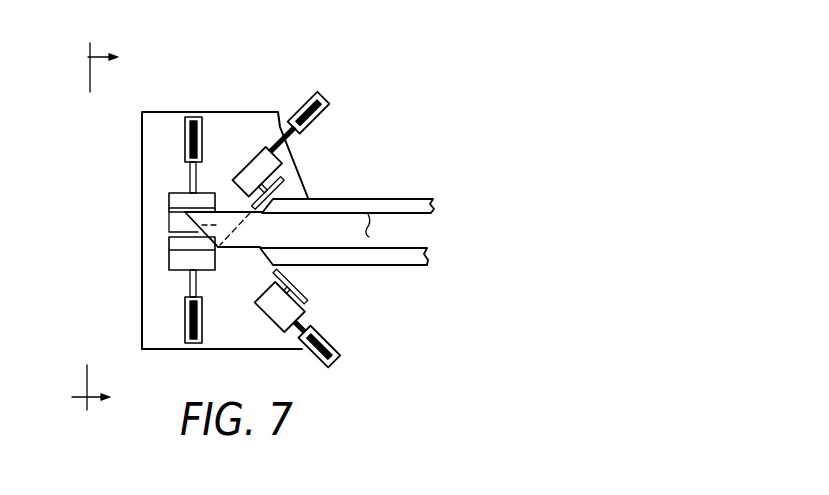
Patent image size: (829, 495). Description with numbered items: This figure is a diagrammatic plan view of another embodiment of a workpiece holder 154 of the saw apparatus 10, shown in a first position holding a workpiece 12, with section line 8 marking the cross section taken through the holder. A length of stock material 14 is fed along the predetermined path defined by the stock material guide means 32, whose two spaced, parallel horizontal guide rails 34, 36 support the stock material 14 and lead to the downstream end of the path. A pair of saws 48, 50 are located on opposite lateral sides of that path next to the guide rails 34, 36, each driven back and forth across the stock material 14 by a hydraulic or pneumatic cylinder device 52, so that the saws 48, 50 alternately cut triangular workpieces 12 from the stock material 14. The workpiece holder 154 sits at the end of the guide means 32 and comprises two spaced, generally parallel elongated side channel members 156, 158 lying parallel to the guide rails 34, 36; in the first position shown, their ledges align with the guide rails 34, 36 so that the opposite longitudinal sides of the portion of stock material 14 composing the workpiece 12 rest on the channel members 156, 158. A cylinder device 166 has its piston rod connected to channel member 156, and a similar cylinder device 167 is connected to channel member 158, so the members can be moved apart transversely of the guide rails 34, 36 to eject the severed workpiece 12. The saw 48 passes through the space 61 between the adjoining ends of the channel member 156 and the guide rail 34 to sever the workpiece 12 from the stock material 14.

The section line 8- 8 is at (92, 232).
The saw apparatus 10 is at (428, 123).
The workpiece 12 is at (198, 231).
The stock material 14 is at (355, 237).
The stock material guide means 32 is at (399, 280).
The guide rail 34 is at (382, 207).
The guide rail 36 is at (342, 258).
The saw 48 is at (263, 172).
The saw 50 is at (272, 325).
The hydraulic or pneumatic cylinder device 52 is at (320, 120).
The space 61 is at (232, 200).
The workpiece holder 154 is at (121, 145).
The side channel member 156 is at (225, 195).
The side channel member 158 is at (197, 262).
The hydraulic or pneumatic cylinder device 166 is at (192, 117).
The hydraulic or pneumatic cylinder device 167 is at (185, 322).